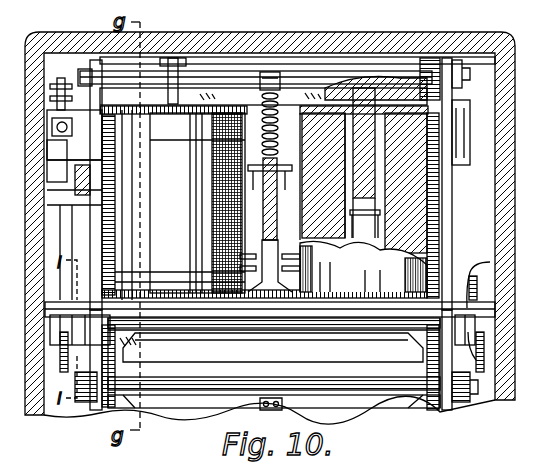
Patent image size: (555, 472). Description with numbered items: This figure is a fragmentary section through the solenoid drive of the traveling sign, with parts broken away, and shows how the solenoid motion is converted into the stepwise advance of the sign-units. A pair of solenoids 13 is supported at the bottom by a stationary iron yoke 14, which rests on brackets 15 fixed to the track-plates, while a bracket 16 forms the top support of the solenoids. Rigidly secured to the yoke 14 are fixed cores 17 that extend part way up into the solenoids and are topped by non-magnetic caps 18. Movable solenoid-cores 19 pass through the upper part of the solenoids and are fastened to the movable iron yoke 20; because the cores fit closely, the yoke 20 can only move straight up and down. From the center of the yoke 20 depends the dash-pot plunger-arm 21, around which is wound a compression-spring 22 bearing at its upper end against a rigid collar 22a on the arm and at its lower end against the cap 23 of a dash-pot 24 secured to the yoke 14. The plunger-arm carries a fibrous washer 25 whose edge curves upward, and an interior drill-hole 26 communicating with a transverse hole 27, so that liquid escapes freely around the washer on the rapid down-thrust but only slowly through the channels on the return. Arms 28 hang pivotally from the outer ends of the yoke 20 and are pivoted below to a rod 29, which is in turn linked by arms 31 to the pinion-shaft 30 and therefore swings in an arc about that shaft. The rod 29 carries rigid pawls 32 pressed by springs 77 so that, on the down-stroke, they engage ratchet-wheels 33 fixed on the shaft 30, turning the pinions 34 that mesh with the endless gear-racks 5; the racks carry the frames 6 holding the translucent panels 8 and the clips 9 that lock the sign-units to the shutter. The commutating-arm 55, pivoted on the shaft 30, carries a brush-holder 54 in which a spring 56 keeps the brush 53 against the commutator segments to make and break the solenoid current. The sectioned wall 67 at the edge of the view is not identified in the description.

The gear-rack 5 is at (430, 58).
The frame 6 is at (190, 62).
The translucent panel 8 is at (271, 347).
The clip 9 is at (300, 310).
The solenoid 13 is at (289, 255).
The iron yoke 14 is at (232, 300).
The bracket 15 is at (46, 344).
The bracket 16 is at (311, 176).
The core 17 is at (373, 275).
The non-magnetic cap 18 is at (365, 217).
The movable solenoid-core 19 is at (175, 100).
The movable iron yoke 20 is at (215, 82).
The dash-pot plunger-arm 21 is at (268, 180).
The compression-spring 22 is at (260, 124).
The rigid collar 22a is at (285, 100).
The cap 23 is at (263, 160).
The dash-pot 24 is at (308, 283).
The fibrous washer 25 is at (255, 256).
The drill-hole 26 is at (258, 231).
The hole 27 is at (250, 216).
The arm 28 is at (92, 137).
The rod 29 is at (328, 328).
The pinion-shaft 30 is at (393, 328).
The arm 31 is at (478, 262).
The pawl 32 is at (62, 345).
The ratchet-wheel 33 is at (484, 356).
The pinion 34 is at (135, 344).
The brush 53 is at (60, 186).
The brush-holder 54 is at (74, 161).
The commutating-arm 55 is at (80, 230).
The spring 56 is at (58, 198).
The housing 67 is at (516, 153).
The spring 77 is at (285, 387).